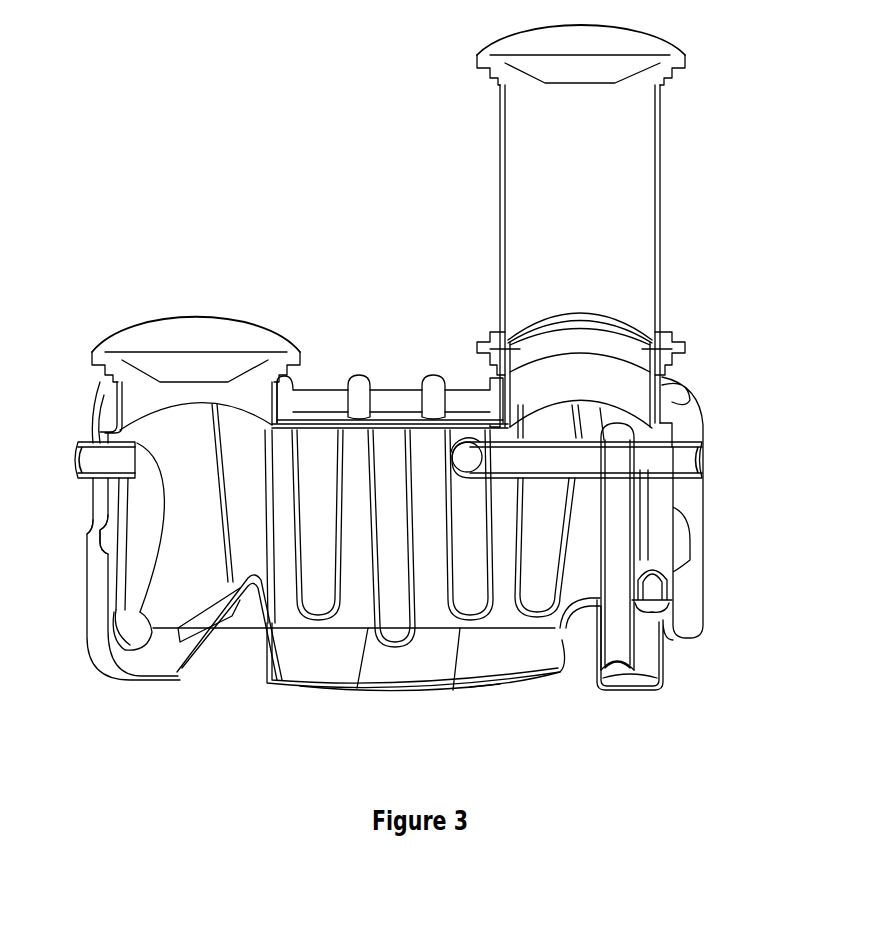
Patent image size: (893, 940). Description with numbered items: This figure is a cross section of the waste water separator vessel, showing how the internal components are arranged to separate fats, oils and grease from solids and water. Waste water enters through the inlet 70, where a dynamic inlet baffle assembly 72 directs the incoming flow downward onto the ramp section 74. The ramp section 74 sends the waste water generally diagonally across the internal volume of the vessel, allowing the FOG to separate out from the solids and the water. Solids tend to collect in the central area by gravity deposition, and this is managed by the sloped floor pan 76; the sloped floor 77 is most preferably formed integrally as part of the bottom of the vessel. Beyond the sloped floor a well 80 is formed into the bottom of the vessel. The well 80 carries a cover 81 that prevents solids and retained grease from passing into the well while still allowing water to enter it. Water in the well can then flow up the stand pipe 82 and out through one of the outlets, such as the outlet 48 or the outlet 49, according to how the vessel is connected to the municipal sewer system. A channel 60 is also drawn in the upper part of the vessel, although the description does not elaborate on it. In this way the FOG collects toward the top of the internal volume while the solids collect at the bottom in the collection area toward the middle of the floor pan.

The outlet 48 is at (702, 465).
The outlet 49 is at (467, 448).
The channel / trough 60 is at (313, 418).
The inlet 70 is at (78, 457).
The dynamic inlet baffle assembly 72 is at (88, 530).
The ramp section 74 is at (215, 660).
The sloped floor pan 76 is at (420, 690).
The sloped floor 77 is at (497, 688).
The well 80 is at (597, 680).
The cover 81 is at (660, 587).
The stand pipe 82 is at (637, 497).